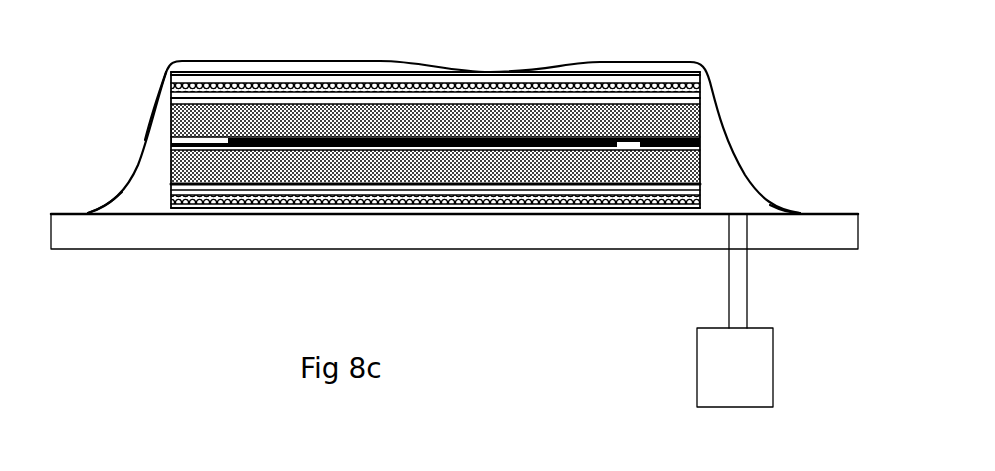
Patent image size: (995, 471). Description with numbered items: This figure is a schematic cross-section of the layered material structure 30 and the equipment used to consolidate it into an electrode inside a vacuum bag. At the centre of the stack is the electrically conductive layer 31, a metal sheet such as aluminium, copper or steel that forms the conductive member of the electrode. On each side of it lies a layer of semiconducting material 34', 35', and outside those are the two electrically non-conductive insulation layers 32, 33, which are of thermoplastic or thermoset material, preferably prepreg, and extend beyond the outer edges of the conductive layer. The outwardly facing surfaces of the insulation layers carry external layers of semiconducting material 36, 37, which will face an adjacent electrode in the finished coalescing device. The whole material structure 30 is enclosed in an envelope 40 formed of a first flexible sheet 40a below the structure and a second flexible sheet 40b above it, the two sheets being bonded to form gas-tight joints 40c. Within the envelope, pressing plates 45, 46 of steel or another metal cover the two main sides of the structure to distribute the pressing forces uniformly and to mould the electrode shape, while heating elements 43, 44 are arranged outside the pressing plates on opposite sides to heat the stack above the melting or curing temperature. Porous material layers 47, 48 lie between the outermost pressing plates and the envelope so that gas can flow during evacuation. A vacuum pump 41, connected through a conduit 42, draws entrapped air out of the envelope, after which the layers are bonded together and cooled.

The layered material structure 30 is at (712, 152).
The electrically conductive layer 31 is at (467, 133).
The insulation layer 32 is at (222, 168).
The insulation layer 33 is at (200, 100).
The layer of semiconducting material 34' is at (411, 189).
The layer of semiconducting material 35' is at (435, 108).
The external layer of semiconducting material 36 is at (375, 186).
The external layer of semiconducting material 37 is at (358, 98).
The envelope 40 is at (717, 83).
The first flexible sheet 40a is at (146, 214).
The second flexible sheet 40b is at (157, 123).
The gas-tight joint 40c is at (88, 212).
The vacuum pump 41 is at (714, 364).
The conduit 42 is at (742, 298).
The heating element 43 is at (485, 208).
The heating element 44 is at (267, 75).
The pressing plate 45 is at (312, 190).
The pressing plate 46 is at (228, 97).
The porous material layer 47 is at (443, 206).
The porous material layer 48 is at (313, 83).